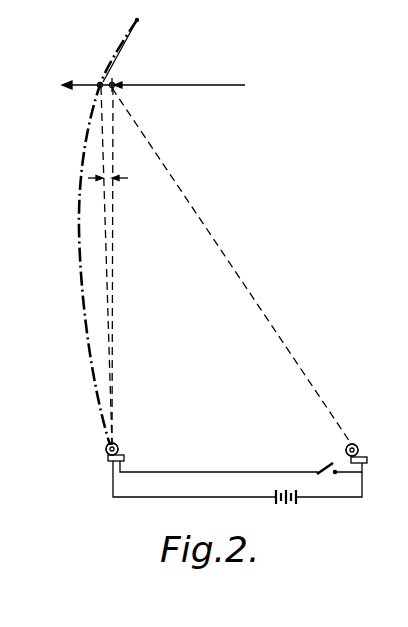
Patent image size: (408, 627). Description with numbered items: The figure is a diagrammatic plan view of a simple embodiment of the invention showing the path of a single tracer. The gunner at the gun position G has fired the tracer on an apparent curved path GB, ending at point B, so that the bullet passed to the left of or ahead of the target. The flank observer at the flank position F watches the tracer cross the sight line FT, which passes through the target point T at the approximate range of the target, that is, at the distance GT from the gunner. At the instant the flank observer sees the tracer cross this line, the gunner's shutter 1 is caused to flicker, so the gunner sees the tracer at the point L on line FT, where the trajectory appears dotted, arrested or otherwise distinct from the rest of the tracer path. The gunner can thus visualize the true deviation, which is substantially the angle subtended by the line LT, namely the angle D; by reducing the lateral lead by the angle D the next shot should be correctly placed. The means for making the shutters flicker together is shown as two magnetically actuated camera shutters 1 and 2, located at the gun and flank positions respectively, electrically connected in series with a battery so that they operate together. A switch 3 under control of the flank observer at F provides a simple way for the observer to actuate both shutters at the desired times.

The end point of tracer path B is at (138, 22).
The point L on line FT L is at (98, 78).
The target point T is at (115, 83).
The angle D is at (107, 178).
The gunner position G is at (102, 457).
The flank observer position F is at (364, 450).
The gunner's shutter 1 is at (118, 447).
The flank observer's shutter 2 is at (352, 444).
The switch 3 is at (322, 467).